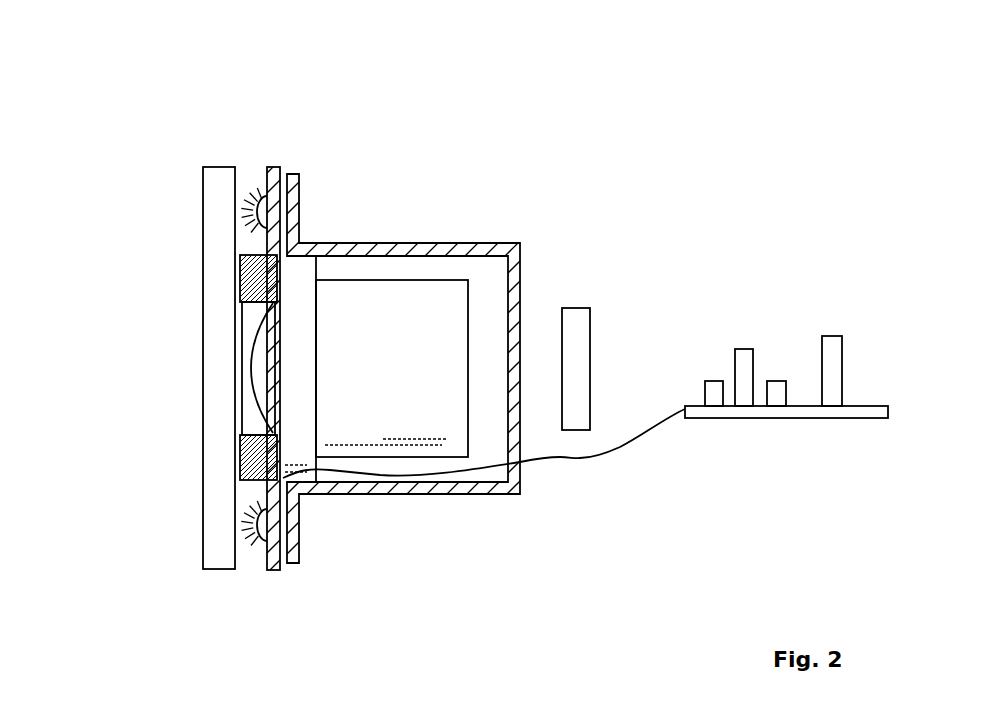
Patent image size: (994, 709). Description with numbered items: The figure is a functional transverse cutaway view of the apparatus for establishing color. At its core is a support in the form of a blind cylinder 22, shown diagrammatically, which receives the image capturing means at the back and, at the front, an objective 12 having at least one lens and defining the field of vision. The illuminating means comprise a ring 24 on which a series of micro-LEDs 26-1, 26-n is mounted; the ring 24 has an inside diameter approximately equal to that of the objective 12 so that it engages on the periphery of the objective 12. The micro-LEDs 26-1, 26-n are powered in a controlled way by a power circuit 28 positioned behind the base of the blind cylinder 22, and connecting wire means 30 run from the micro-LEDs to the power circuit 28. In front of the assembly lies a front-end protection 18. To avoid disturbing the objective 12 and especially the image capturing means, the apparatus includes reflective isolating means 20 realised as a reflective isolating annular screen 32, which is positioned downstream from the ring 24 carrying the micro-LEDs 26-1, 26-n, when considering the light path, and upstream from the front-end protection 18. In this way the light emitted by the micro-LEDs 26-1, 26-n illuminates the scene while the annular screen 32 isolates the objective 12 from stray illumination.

The objective 12 is at (415, 295).
The front-end protection 18 is at (212, 546).
The reflective isolating means 20 is at (232, 450).
The blind cylinder 22 is at (503, 243).
The ring 24 is at (272, 570).
The micro-LED 26-1 is at (262, 192).
The micro-LED 26-n is at (254, 523).
The power circuit 28 is at (802, 410).
The connecting wire means 30 is at (617, 450).
The reflective isolating annular screen 32 is at (238, 470).